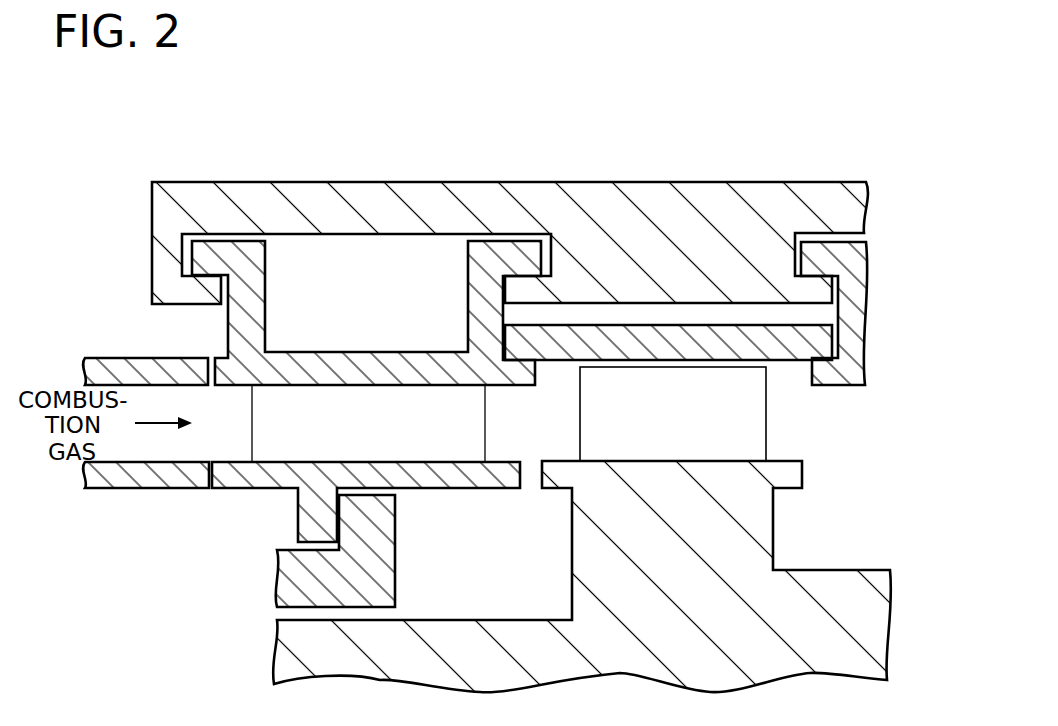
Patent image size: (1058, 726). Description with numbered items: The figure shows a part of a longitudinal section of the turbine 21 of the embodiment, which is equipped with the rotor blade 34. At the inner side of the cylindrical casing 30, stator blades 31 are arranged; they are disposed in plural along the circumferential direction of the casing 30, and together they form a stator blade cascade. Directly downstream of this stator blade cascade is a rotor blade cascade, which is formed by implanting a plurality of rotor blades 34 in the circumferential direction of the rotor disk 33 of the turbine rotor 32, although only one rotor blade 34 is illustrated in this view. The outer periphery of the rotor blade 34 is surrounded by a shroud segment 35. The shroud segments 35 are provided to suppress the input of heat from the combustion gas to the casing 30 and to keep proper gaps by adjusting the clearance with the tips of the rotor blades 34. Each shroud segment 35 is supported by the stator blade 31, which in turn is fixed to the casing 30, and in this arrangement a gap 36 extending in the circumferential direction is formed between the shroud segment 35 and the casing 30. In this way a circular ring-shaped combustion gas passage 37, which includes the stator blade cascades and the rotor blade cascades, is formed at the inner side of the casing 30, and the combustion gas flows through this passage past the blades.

The turbine 21 is at (887, 140).
The casing 30 is at (643, 203).
The stator blade 31 is at (275, 399).
The turbine rotor 32 is at (300, 648).
The rotor disk 33 is at (750, 515).
The rotor blade 34 is at (742, 419).
The shroud segment 35 is at (810, 336).
The gap 36 is at (810, 312).
The combustion gas passage 37 is at (116, 448).